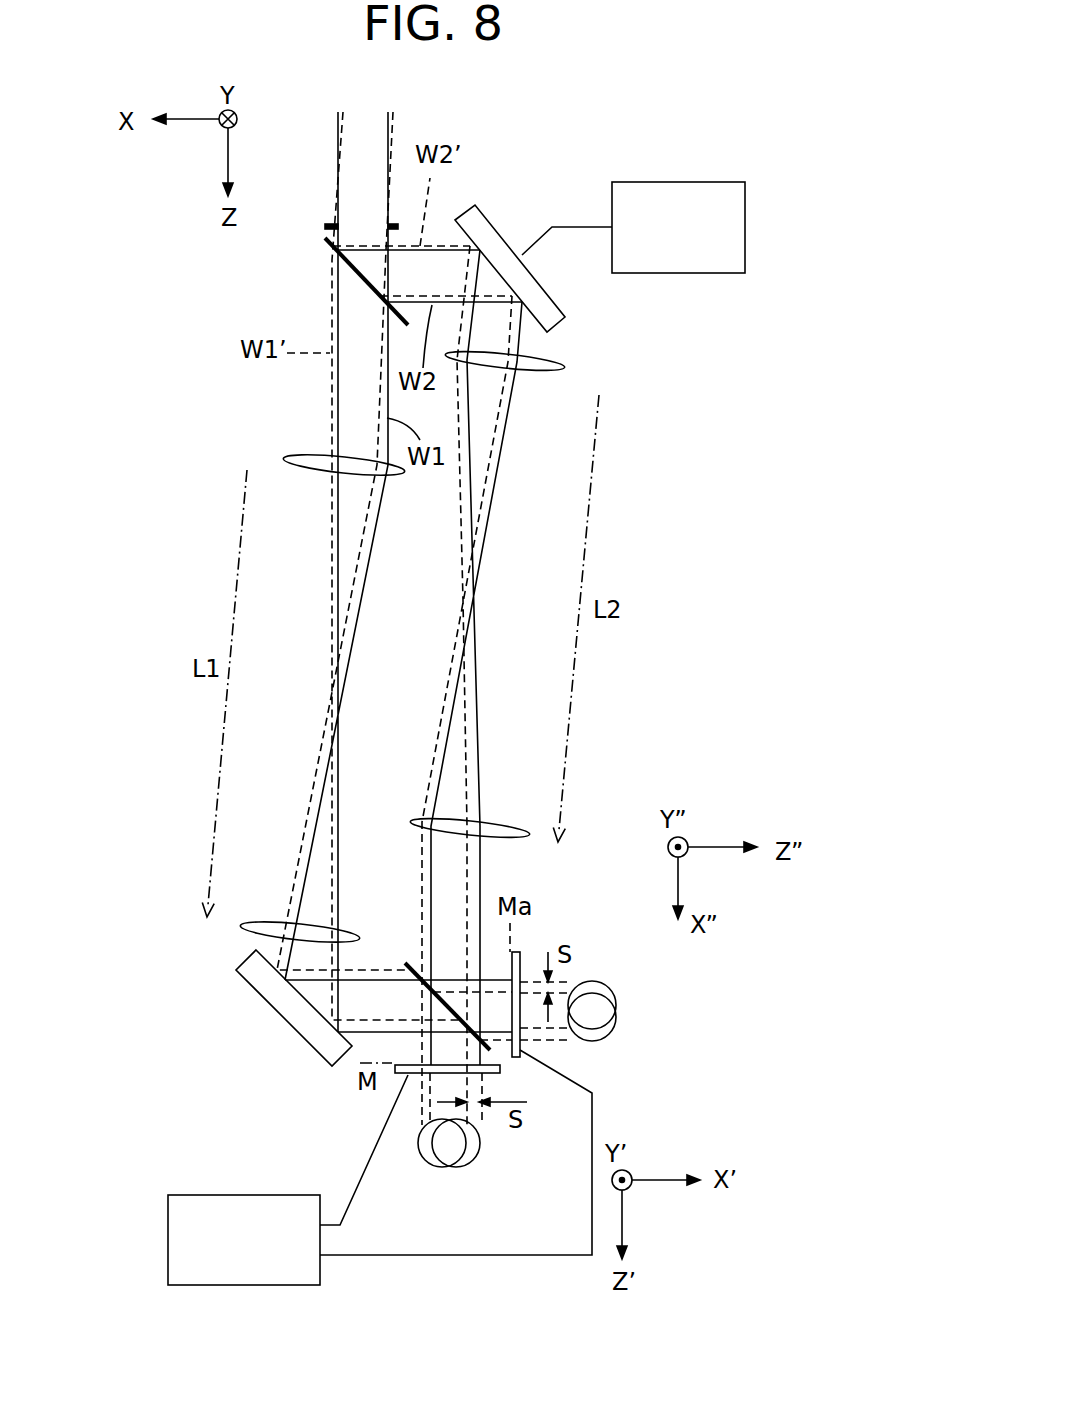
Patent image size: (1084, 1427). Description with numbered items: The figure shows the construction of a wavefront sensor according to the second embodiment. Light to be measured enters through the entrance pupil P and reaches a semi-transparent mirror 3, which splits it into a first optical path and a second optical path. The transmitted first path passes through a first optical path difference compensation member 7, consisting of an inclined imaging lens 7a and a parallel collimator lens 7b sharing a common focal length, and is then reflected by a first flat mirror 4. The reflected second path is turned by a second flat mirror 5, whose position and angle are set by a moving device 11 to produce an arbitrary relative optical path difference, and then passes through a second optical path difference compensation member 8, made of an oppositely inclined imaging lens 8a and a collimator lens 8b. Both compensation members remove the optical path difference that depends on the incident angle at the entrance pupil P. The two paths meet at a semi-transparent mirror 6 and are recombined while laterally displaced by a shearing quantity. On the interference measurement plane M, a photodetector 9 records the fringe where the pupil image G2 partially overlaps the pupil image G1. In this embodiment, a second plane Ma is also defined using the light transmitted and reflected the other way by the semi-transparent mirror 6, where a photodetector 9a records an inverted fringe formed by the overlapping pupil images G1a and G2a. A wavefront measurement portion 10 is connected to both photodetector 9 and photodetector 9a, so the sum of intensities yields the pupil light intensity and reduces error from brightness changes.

The semi-transparent mirror 3 is at (327, 243).
The first flat mirror 4 is at (273, 1015).
The second flat mirror 5 is at (485, 210).
The semi-transparent mirror 6 is at (405, 963).
The first optical path difference compensation member 7 is at (304, 671).
The imaging lens 7a is at (303, 471).
The collimator lens 7b is at (262, 922).
The second optical path difference compensation member 8 is at (544, 590).
The imaging lens 8a is at (532, 372).
The collimator lens 8b is at (513, 822).
The photodetector 9 is at (500, 1067).
The photodetector 9a is at (520, 950).
The wavefront measurement portion 10 is at (168, 1245).
The moving device 11 is at (670, 182).
The entrance pupil P is at (325, 224).
The pupil image G1 is at (422, 1158).
The pupil image G2 is at (477, 1157).
The pupil image G1a is at (608, 985).
The pupil image G2a is at (603, 1038).